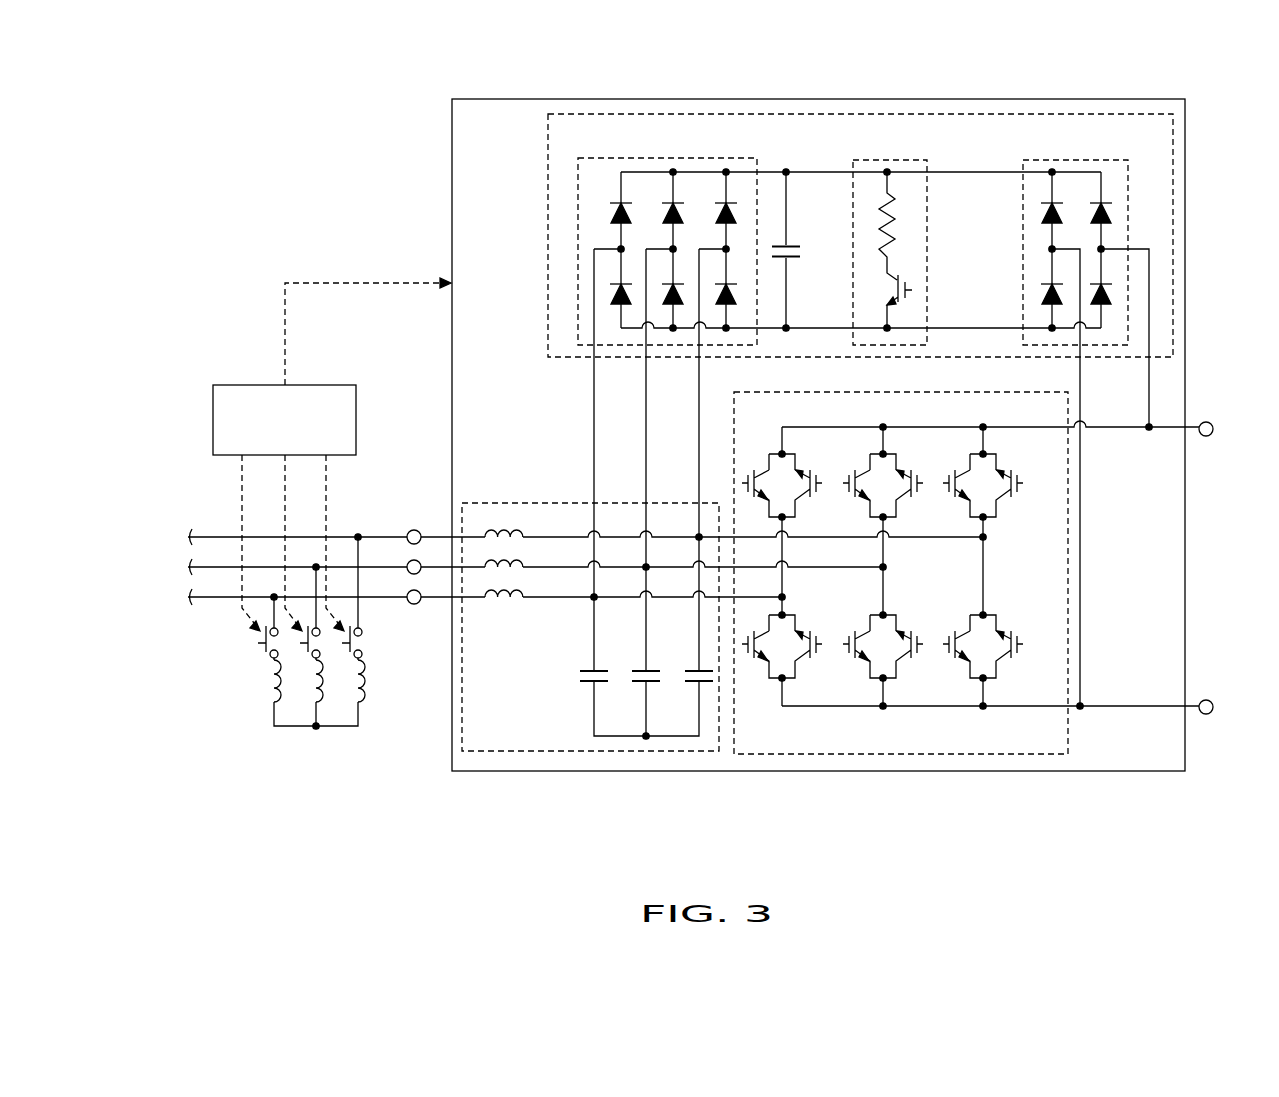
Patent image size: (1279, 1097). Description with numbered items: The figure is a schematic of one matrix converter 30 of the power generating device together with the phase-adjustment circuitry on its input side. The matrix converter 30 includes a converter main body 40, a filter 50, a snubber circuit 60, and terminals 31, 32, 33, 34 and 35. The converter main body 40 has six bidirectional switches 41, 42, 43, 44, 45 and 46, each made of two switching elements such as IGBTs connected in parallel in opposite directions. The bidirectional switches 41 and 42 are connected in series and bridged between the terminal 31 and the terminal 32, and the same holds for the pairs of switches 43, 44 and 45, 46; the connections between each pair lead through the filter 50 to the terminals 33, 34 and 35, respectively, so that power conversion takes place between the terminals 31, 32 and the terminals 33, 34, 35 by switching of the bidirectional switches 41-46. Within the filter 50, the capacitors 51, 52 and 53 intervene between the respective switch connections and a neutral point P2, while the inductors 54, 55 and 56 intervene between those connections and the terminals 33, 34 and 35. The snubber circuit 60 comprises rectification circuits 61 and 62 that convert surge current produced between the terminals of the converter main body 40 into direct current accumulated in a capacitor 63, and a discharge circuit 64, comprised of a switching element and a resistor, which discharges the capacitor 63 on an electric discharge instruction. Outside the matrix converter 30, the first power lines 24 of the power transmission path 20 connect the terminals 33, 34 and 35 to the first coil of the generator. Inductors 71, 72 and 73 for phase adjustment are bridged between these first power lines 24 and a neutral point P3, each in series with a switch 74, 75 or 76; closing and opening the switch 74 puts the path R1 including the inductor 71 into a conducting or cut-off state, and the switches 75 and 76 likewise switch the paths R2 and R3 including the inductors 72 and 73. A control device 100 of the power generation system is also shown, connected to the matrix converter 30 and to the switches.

The power transmission path 20 is at (345, 518).
The first power line 24 is at (216, 594).
The matrix converter 30 is at (1186, 195).
The terminal 31 is at (1213, 429).
The terminal 32 is at (1213, 707).
The terminal 33 is at (414, 529).
The terminal 34 is at (407, 566).
The terminal 35 is at (414, 604).
The converter main body 40 is at (943, 605).
The bidirectional switch 41 is at (1007, 450).
The bidirectional switch 42 is at (1007, 608).
The bidirectional switch 43 is at (906, 450).
The bidirectional switch 44 is at (906, 608).
The bidirectional switch 45 is at (804, 450).
The bidirectional switch 46 is at (804, 608).
The filter 50 is at (590, 533).
The capacitor 51 is at (686, 661).
The capacitor 52 is at (634, 661).
The capacitor 53 is at (582, 661).
The inductor 54 is at (530, 524).
The inductor 55 is at (530, 554).
The inductor 56 is at (530, 586).
The snubber circuit 60 is at (830, 410).
The rectification circuit 61 is at (1069, 160).
The rectification circuit 62 is at (664, 158).
The capacitor 63 is at (800, 241).
The discharge circuit 64 is at (889, 160).
The inductor for phase adjustment 71 is at (374, 710).
The inductor for phase adjustment 72 is at (310, 708).
The inductor for phase adjustment 73 is at (266, 708).
The switch 74 is at (372, 654).
The switch 75 is at (328, 656).
The switch 76 is at (248, 663).
The control device 100 is at (246, 385).
The neutral point P2 is at (646, 740).
The neutral point P3 is at (316, 730).
The path R1 is at (371, 666).
The path R2 is at (307, 667).
The path R3 is at (259, 667).